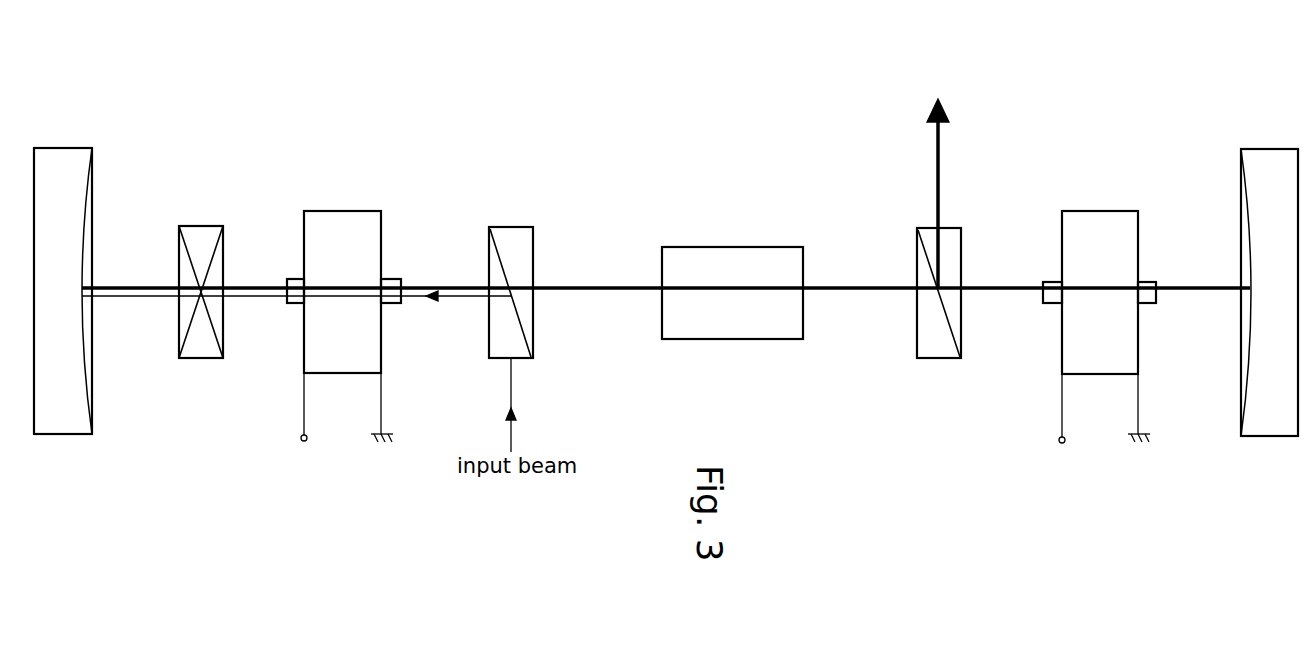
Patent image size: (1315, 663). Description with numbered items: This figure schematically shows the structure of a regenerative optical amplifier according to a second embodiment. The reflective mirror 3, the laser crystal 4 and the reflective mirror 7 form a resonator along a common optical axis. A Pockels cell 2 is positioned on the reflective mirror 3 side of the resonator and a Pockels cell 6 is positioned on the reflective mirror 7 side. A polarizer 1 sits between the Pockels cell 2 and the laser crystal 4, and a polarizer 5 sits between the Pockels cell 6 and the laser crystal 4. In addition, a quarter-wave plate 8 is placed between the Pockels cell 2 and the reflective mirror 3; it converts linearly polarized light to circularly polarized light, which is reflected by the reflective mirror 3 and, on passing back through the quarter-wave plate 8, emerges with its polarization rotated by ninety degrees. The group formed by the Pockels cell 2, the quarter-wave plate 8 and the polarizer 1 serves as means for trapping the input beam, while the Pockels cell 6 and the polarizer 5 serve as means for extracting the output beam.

The polarizer 1 is at (507, 227).
The Pockels cell 2 is at (336, 211).
The reflective mirror 3 is at (62, 148).
The laser crystal 4 is at (729, 247).
The polarizer 5 is at (955, 228).
The Pockels cell 6 is at (1097, 211).
The reflective mirror 7 is at (1262, 149).
The quarter-wave plate 8 is at (200, 226).